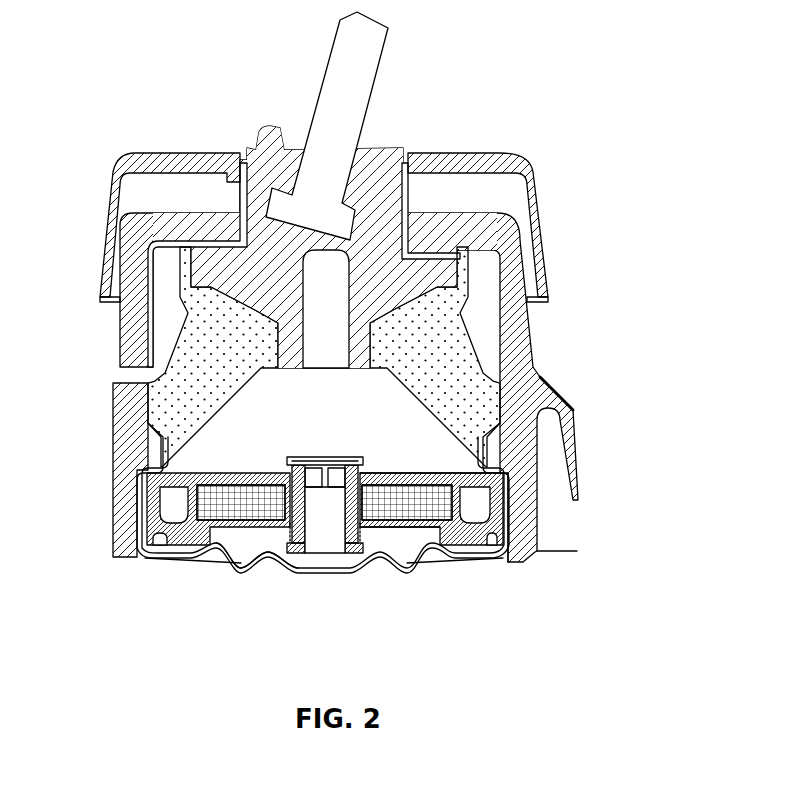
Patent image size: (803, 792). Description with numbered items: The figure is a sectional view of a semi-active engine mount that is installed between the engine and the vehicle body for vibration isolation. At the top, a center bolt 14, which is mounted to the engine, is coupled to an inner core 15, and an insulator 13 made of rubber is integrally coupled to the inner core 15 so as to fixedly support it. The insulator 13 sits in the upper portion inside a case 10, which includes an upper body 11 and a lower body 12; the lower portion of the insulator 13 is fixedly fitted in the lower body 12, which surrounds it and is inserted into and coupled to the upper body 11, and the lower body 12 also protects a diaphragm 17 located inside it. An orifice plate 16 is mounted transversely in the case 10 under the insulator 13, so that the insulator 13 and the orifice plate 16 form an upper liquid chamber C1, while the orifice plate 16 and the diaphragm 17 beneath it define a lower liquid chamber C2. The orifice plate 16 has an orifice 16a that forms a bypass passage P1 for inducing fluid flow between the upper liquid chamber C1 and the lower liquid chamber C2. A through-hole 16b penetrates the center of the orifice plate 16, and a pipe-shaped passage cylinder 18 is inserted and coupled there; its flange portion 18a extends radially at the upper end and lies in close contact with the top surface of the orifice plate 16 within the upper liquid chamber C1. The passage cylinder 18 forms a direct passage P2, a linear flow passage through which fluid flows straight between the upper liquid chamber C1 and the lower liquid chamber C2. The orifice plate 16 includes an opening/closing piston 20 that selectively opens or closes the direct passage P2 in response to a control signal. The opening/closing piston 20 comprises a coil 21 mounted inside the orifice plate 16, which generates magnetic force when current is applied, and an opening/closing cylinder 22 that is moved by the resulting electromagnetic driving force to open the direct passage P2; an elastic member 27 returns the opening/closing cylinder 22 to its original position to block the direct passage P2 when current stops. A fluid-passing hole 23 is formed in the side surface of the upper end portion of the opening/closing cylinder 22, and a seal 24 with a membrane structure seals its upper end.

The case 10 is at (550, 374).
The upper body 11 is at (522, 258).
The lower body 12 is at (513, 532).
The insulator 13 is at (182, 347).
The center bolt 14 is at (372, 68).
The inner core 15 is at (385, 163).
The orifice plate 16 is at (201, 462).
The orifice 16a is at (165, 510).
The through-hole 16b is at (290, 542).
The diaphragm 17 is at (435, 560).
The passage cylinder 18 is at (372, 505).
The flange portion 18a is at (368, 472).
The opening/closing piston 20 is at (321, 442).
The coil 21 is at (218, 523).
The opening/closing cylinder 22 is at (313, 536).
The fluid-passing hole 23 is at (314, 472).
The seal 24 is at (342, 466).
The elastic member 27 is at (398, 543).
The upper liquid chamber C1 is at (330, 352).
The lower liquid chamber C2 is at (410, 571).
The bypass passage P1 is at (180, 520).
The direct passage P2 is at (330, 507).